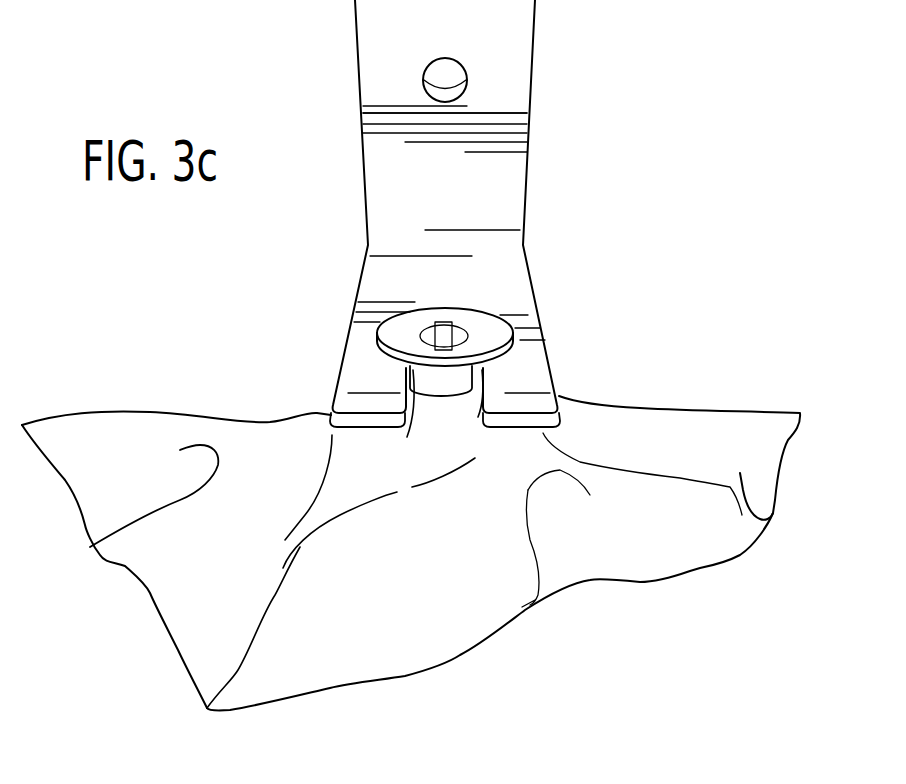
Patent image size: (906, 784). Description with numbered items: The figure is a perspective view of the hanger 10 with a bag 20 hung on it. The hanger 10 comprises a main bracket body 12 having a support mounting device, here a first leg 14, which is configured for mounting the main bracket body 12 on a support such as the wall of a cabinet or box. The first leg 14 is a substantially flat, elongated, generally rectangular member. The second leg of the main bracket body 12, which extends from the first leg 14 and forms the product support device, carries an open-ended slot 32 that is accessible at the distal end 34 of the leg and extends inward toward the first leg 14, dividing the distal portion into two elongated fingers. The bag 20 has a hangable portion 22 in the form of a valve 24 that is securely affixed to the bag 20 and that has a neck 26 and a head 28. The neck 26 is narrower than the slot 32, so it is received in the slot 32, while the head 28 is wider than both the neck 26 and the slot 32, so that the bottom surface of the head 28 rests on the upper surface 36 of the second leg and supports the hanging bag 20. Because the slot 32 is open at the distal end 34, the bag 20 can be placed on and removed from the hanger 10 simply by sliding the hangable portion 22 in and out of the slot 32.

The hanger 10 is at (592, 111).
The main bracket body 12 is at (366, 180).
The first leg 14 is at (513, 33).
The bag 20 is at (443, 570).
The hangable portion 22 is at (478, 431).
The valve 24 is at (470, 372).
The neck 26 is at (410, 380).
The head 28 is at (425, 318).
The open-ended slot 32 is at (476, 403).
The distal end 34 is at (363, 421).
The upper surface 36 is at (500, 278).